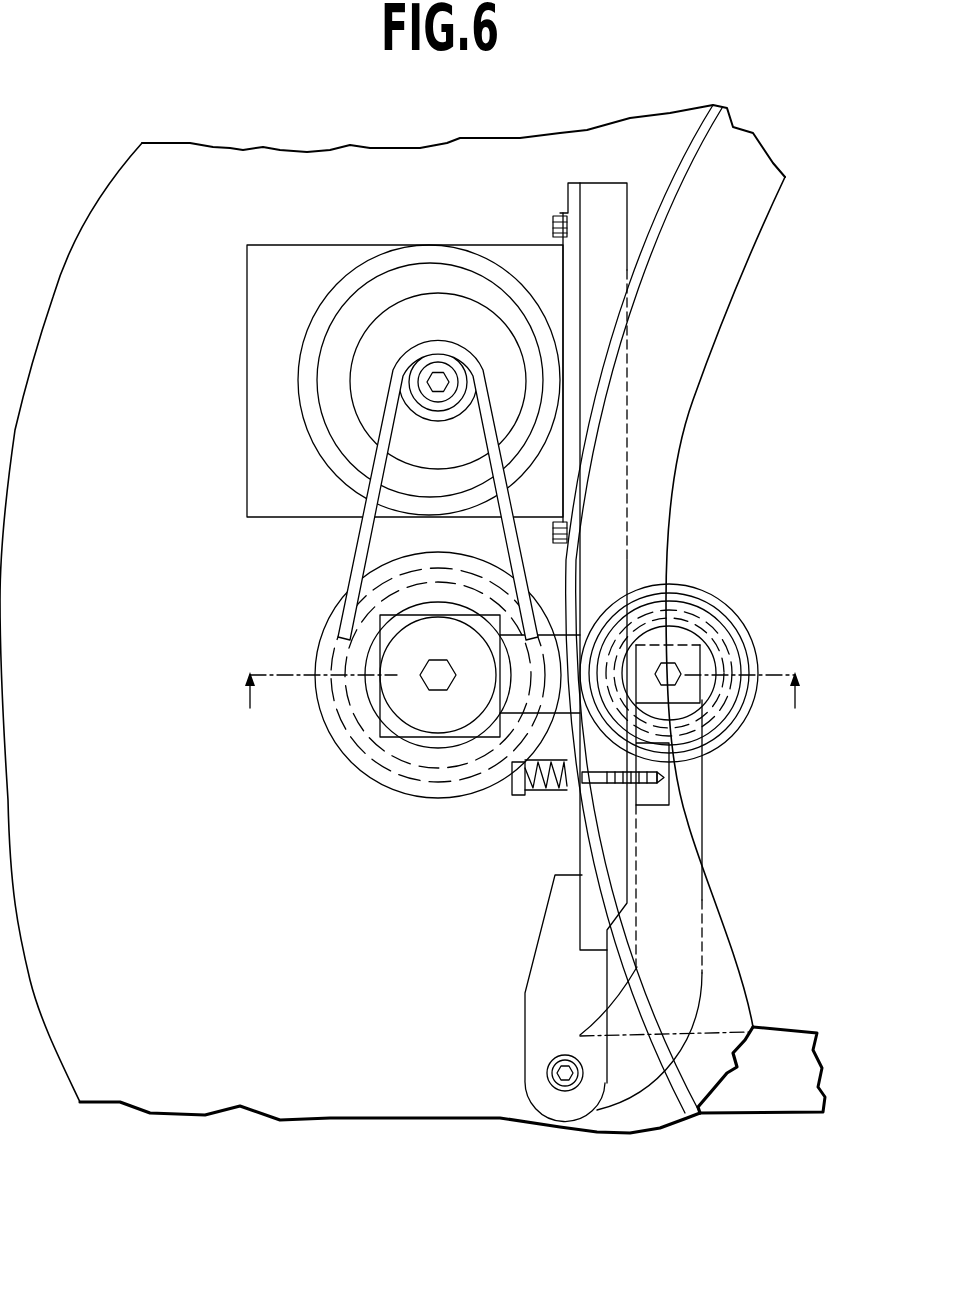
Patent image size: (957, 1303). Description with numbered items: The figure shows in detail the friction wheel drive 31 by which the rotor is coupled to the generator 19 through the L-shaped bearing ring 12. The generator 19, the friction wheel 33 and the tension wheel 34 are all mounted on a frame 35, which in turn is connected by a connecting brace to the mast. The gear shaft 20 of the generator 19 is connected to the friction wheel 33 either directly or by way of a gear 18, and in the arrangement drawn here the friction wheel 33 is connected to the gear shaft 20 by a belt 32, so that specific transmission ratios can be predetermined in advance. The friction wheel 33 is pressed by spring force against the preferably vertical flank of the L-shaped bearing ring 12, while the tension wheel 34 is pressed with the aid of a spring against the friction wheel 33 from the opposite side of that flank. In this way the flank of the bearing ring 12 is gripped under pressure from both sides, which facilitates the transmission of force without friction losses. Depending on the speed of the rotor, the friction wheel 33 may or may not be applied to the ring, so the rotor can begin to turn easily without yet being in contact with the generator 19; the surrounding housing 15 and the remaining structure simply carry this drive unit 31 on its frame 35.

The L-shaped bearing ring 12 is at (690, 367).
The housing 15 is at (217, 147).
The gear 18 is at (501, 538).
The generator 19 is at (254, 297).
The gear shaft 20 is at (441, 376).
The friction wheel drive 31 is at (635, 816).
The belt 32 is at (428, 490).
The friction wheel 33 is at (382, 777).
The tension wheel 34 is at (727, 733).
The frame 35 is at (570, 265).